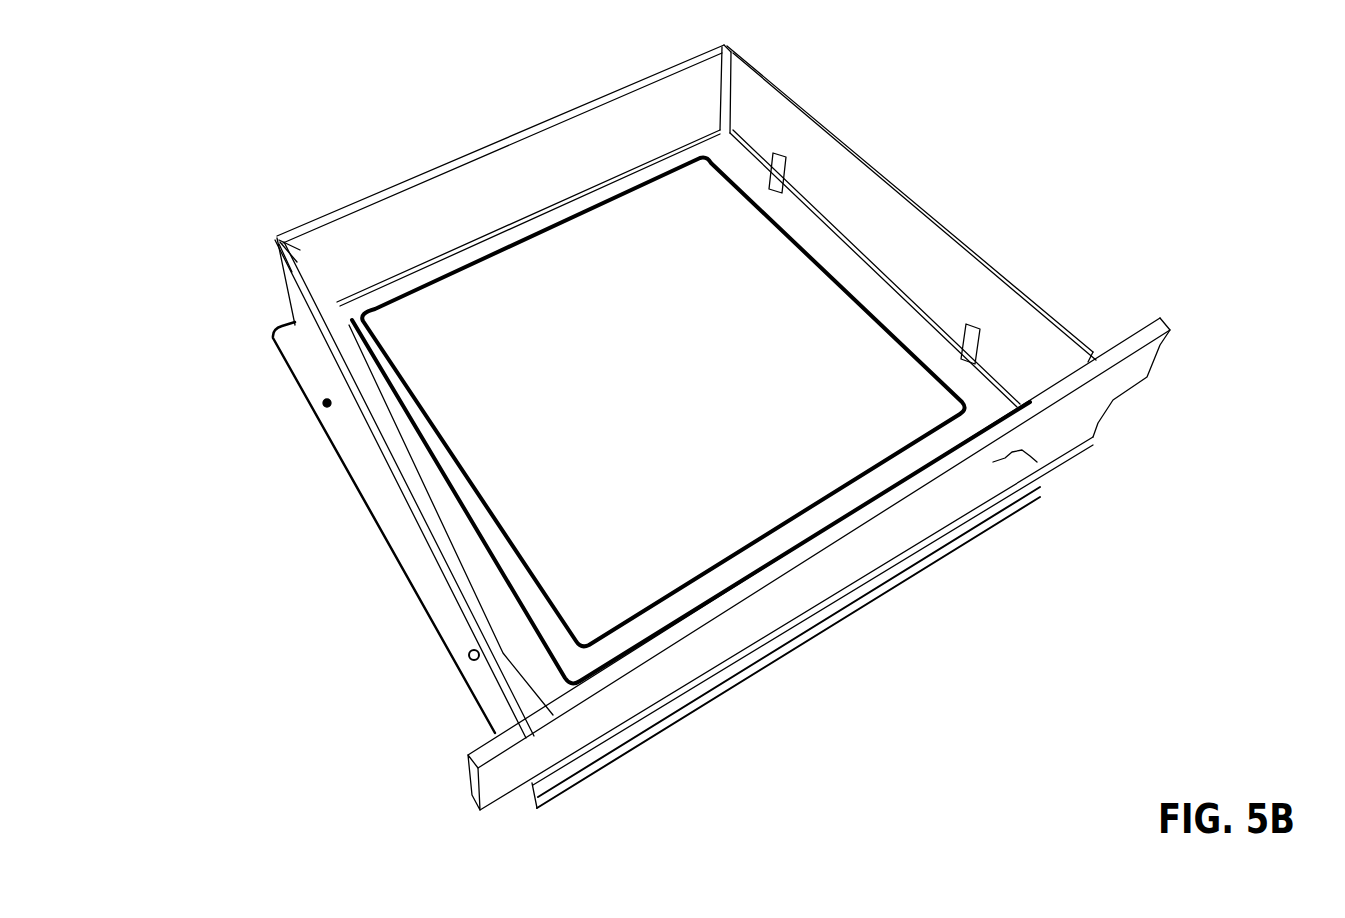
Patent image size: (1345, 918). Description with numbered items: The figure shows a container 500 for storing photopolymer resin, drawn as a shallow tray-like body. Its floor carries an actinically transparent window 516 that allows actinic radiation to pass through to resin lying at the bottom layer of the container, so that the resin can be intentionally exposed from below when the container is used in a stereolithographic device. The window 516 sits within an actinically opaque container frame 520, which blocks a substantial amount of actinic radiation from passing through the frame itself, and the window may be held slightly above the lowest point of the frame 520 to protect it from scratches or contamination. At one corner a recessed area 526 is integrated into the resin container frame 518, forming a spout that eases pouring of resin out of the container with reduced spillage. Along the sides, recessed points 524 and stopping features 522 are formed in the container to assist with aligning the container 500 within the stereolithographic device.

The container 500 is at (254, 62).
The actinically transparent window 516 is at (592, 359).
The resin container frame 518 is at (381, 498).
The container frame 520 is at (874, 302).
The stopping features 522 is at (1059, 423).
The recessed points 524 is at (469, 668).
The recessed area 526 is at (294, 212).